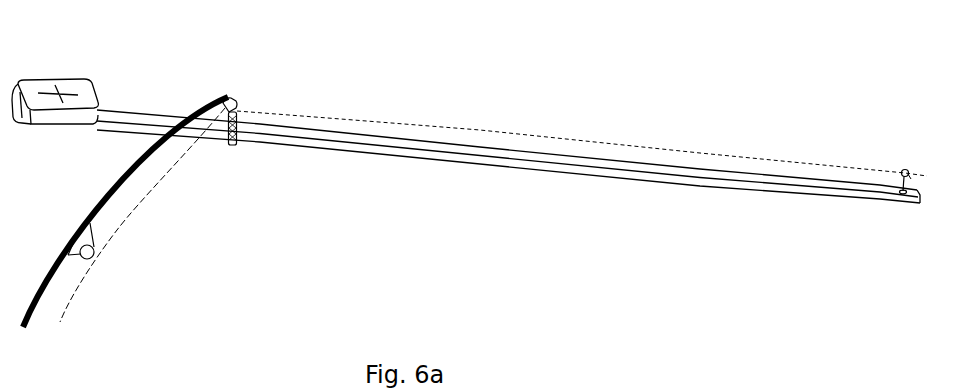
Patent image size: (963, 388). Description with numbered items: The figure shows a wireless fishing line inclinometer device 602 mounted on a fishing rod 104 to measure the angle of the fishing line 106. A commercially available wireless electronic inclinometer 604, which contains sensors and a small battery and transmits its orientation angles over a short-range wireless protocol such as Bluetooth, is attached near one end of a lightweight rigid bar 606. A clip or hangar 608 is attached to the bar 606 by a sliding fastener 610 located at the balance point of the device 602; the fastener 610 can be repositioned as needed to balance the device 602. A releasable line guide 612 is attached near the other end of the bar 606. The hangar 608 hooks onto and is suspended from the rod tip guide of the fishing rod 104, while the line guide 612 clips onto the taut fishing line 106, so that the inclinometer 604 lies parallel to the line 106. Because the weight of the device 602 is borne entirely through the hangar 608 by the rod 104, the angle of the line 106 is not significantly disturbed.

The fishing rod 104 is at (208, 97).
The fishing line 106 is at (373, 120).
The wireless fishing line inclinometer device 602 is at (395, 208).
The wireless electronic inclinometer 604 is at (78, 75).
The lightweight rigid bar 606 is at (635, 183).
The clip or hangar 608 is at (238, 112).
The sliding fastener 610 is at (236, 150).
The releasable line guide 612 is at (897, 162).